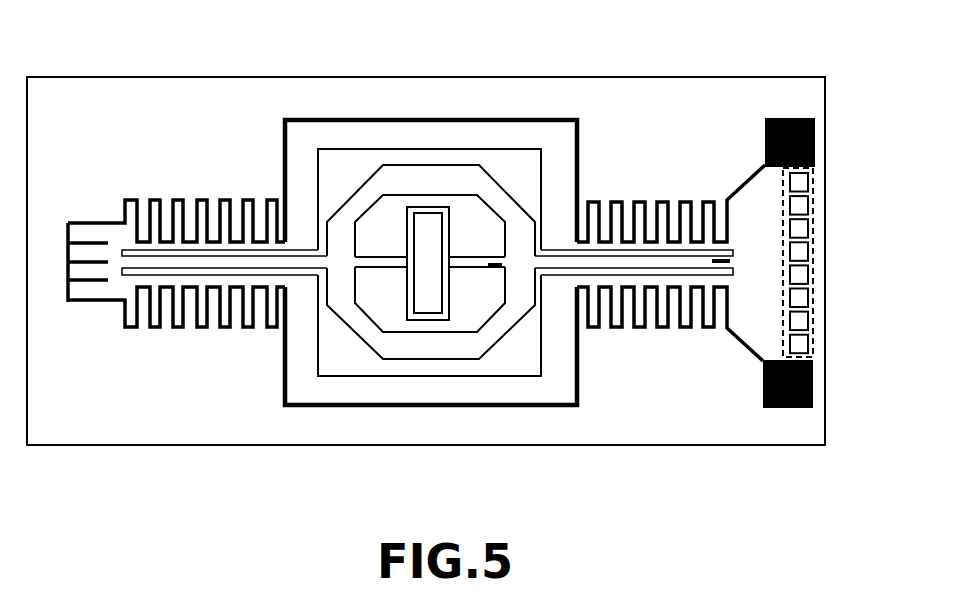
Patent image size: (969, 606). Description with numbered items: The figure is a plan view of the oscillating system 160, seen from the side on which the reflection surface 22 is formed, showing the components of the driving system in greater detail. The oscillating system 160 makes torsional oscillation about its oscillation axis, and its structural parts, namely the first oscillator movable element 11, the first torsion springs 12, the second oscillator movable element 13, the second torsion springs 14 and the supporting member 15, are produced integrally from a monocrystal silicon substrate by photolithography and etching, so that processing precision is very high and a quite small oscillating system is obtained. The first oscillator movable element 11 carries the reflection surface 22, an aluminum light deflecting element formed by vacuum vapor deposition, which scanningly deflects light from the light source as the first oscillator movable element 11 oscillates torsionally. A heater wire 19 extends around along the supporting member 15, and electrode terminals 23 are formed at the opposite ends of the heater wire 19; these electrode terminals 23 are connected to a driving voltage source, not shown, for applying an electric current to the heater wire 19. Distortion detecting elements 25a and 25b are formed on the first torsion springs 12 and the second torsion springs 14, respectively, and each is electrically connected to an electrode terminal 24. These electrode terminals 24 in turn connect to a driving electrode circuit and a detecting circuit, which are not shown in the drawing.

The oscillating system 160 is at (98, 59).
The supporting member 15 is at (648, 106).
The heater wire 19 is at (345, 118).
The second torsion springs 14 is at (298, 262).
The second oscillator movable element 13 is at (378, 345).
The first torsion springs 12 is at (392, 268).
The first oscillator movable element 11 is at (448, 208).
The reflection surface 22 is at (432, 226).
The distortion detecting element 25a is at (486, 266).
The distortion detecting element 25b is at (712, 262).
The electrode terminals 23 is at (815, 140).
The electrode terminals 24 is at (813, 253).